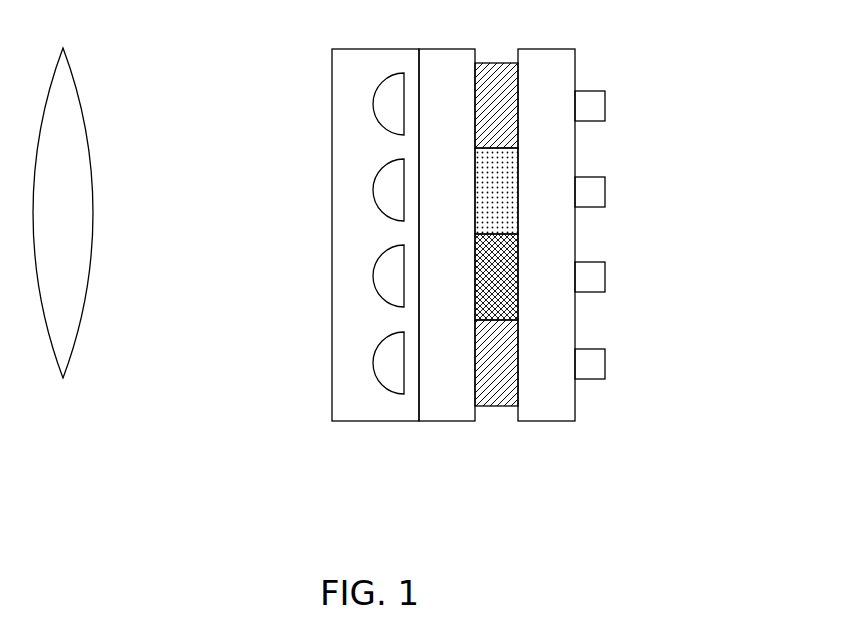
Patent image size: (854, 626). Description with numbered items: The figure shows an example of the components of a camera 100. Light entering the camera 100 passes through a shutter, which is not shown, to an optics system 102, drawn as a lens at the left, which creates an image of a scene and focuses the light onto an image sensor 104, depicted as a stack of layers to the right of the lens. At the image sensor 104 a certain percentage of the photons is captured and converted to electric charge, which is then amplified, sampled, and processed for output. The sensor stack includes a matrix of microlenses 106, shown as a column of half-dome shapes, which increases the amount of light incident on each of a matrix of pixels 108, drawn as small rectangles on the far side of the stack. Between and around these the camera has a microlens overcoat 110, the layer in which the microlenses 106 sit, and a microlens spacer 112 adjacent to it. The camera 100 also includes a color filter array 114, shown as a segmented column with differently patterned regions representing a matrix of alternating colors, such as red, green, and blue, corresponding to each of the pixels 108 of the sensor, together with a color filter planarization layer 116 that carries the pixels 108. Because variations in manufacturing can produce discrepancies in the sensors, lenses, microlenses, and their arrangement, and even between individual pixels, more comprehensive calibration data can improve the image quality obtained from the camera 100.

The camera 100 is at (732, 98).
The optics system 102 is at (63, 378).
The image sensor 104 is at (311, 373).
The matrix of microlenses 106 is at (370, 262).
The matrix of pixels 108 is at (613, 100).
The microlens overcoat 110 is at (372, 421).
The microlens spacer 112 is at (447, 421).
The color filter array 114 is at (500, 406).
The color filter planarization layer 116 is at (553, 421).